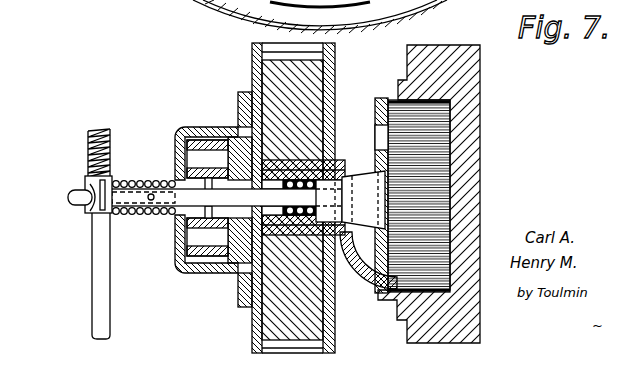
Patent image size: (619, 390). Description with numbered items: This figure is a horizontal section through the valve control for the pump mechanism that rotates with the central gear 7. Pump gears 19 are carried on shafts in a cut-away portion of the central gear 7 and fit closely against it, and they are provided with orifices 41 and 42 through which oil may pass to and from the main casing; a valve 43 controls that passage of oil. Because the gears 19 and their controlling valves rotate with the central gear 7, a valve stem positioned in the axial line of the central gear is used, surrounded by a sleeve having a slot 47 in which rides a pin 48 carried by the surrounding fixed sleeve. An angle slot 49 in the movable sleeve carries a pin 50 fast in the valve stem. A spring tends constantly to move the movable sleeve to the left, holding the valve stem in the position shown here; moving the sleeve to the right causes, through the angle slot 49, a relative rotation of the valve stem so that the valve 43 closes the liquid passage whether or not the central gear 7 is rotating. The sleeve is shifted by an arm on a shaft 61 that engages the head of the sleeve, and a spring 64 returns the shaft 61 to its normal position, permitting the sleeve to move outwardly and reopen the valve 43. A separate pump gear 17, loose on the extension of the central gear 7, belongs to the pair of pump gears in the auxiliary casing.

The central gear 7 is at (463, 155).
The pump gear 17 is at (272, 76).
The pump gear 19 is at (440, 127).
The orifice 41 is at (368, 286).
The orifice 42 is at (378, 128).
The valve 43 is at (364, 224).
The slot 47 is at (173, 183).
The pin 48 is at (209, 178).
The angle slot 49 is at (150, 195).
The pin 50 is at (152, 207).
The shaft 61 is at (92, 255).
The spring 64 is at (100, 130).